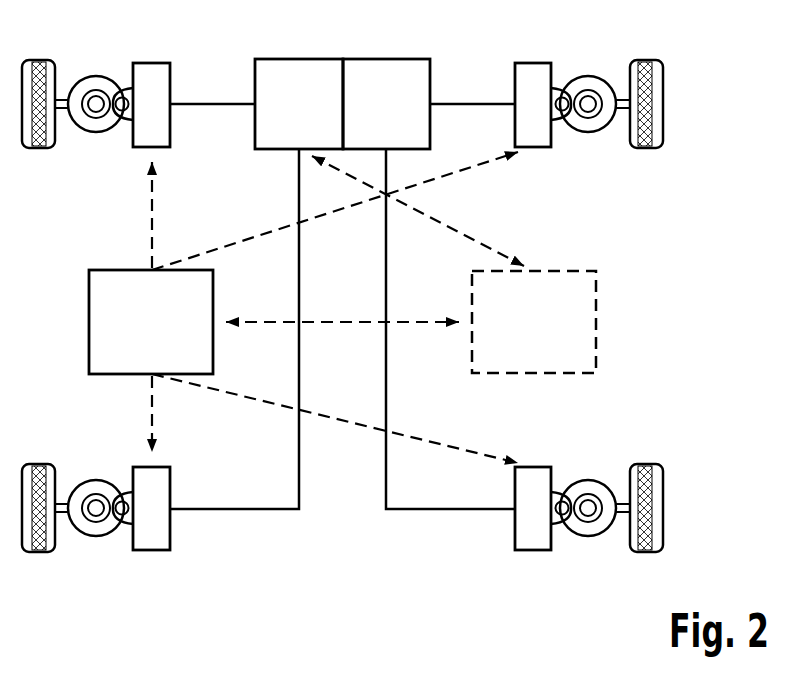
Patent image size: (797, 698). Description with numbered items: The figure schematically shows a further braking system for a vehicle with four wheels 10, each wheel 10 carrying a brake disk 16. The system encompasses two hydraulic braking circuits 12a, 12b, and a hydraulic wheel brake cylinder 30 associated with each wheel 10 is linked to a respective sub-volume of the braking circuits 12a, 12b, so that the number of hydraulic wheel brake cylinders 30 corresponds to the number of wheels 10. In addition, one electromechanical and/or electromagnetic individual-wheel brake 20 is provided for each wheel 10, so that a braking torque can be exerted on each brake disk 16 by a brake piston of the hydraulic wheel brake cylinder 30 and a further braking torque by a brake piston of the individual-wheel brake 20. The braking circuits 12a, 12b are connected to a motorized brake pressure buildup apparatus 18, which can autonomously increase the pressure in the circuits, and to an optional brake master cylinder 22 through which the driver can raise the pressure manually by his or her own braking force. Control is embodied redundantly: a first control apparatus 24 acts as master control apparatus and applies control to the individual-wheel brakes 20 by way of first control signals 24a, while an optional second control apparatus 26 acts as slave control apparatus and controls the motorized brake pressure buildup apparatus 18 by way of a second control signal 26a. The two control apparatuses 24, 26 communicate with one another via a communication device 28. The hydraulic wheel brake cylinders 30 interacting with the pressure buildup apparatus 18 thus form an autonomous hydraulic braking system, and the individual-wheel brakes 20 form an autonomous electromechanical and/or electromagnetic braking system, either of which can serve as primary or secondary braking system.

The wheel 10 is at (37, 62).
The braking circuit 12a is at (210, 102).
The braking circuit 12b is at (262, 512).
The brake disk 16 is at (94, 82).
The motorized brake pressure buildup apparatus 18 is at (299, 70).
The electromechanical and/or electromagnetic individual-wheel brake 20 is at (170, 128).
The brake master cylinder 22 is at (384, 70).
The first control apparatus 24 is at (88, 323).
The first control signal 24a is at (220, 247).
The second control apparatus 26 is at (596, 323).
The second control signal 26a is at (471, 236).
The communication device 28 is at (343, 325).
The hydraulic wheel brake cylinder 30 is at (127, 90).